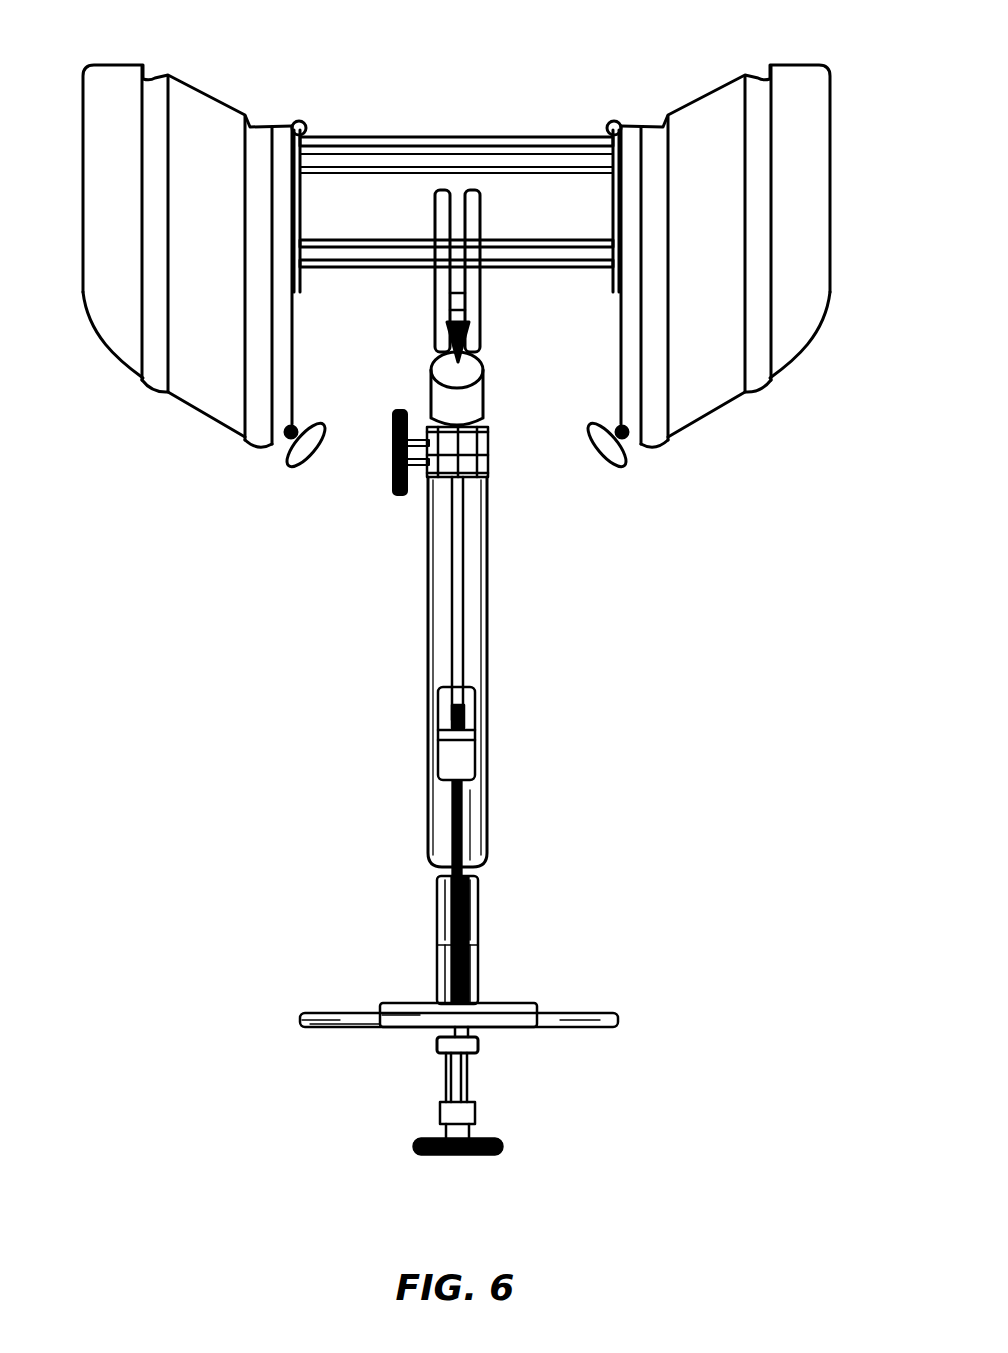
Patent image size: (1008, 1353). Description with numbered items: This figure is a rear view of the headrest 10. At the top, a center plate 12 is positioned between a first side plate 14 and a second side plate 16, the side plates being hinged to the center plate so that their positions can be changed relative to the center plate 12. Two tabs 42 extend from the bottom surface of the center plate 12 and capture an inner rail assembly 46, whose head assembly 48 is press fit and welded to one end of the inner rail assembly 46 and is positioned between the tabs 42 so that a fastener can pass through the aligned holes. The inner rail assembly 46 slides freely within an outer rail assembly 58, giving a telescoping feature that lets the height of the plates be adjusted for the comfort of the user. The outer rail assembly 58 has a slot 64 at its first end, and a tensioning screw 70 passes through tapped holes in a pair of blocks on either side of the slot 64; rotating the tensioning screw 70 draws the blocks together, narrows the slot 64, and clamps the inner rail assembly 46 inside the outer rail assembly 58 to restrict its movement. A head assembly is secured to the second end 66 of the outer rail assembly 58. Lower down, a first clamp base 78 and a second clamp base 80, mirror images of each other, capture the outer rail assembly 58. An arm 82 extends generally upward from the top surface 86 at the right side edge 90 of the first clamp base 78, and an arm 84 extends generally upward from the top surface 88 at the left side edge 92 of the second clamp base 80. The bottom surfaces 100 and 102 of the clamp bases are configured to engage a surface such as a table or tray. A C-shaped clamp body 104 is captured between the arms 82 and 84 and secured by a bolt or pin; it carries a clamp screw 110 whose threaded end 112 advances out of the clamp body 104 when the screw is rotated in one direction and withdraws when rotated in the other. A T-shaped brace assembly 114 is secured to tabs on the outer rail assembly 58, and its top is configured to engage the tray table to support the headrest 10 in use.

The headrest 10 is at (266, 62).
The center plate 12 is at (337, 185).
The first side plate 14 is at (695, 363).
The second side plate 16 is at (222, 358).
The tab 42 is at (480, 195).
The inner rail assembly 46 is at (460, 413).
The head assembly 48 is at (460, 336).
The outer rail assembly 58 is at (475, 800).
The slot 64 is at (466, 657).
The second end 66 is at (437, 828).
The tensioning screw 70 is at (390, 493).
The first clamp base 78 is at (604, 1016).
The second clamp base 80 is at (305, 1018).
The arm 82 is at (478, 918).
The arm 84 is at (440, 925).
The top surface 86 is at (556, 1012).
The top surface 88 is at (336, 1017).
The right side edge 90 is at (478, 978).
The left side edge 92 is at (440, 983).
The bottom surface 100 is at (487, 1013).
The bottom surface 102 is at (334, 1028).
The clamp body 104 is at (462, 1029).
The clamp screw 110 is at (436, 1154).
The threaded end 112 is at (403, 1025).
The brace assembly 114 is at (455, 850).